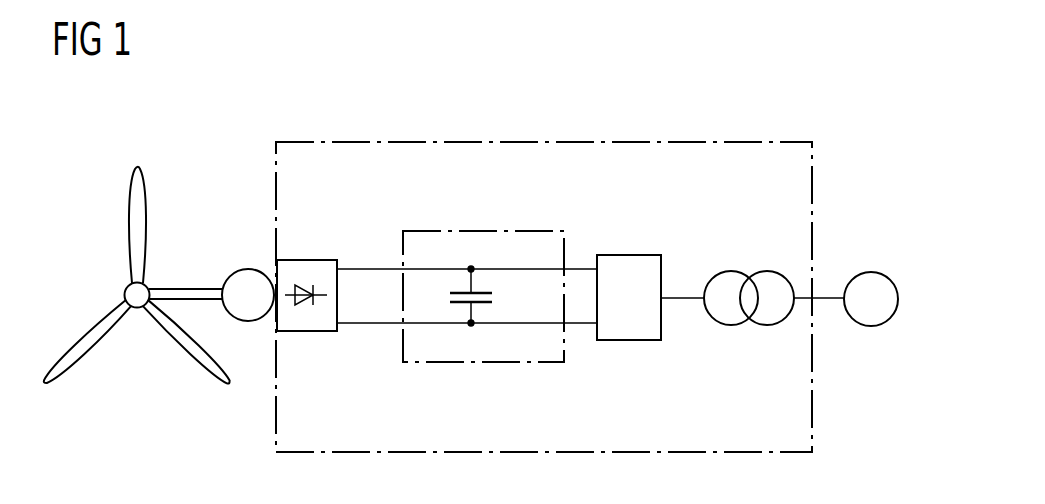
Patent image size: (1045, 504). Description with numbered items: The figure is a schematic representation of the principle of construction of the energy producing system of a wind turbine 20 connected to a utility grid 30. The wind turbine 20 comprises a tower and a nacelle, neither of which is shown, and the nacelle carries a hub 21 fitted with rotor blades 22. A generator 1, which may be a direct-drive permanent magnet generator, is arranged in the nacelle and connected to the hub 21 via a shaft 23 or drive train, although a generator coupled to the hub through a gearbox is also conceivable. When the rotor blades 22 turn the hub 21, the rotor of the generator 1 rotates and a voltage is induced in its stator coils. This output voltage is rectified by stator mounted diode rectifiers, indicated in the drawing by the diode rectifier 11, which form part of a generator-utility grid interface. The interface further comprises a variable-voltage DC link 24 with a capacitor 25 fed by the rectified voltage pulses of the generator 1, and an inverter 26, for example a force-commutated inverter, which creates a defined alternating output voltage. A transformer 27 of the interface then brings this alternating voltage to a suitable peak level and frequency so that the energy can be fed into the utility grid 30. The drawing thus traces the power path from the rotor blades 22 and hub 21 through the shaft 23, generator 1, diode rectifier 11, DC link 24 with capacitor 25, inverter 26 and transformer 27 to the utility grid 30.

The generator 1 is at (248, 275).
The diode rectifier 11 is at (320, 331).
The wind turbine 20 is at (788, 110).
The hub 21 is at (137, 303).
The rotor blades 22 is at (136, 215).
The shaft 23 is at (197, 295).
The variable-voltage DC link 24 is at (500, 231).
The capacitor 25 is at (488, 295).
The inverter 26 is at (630, 255).
The transformer 27 is at (732, 270).
The utility grid 30 is at (873, 272).